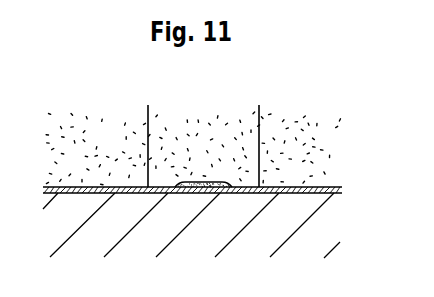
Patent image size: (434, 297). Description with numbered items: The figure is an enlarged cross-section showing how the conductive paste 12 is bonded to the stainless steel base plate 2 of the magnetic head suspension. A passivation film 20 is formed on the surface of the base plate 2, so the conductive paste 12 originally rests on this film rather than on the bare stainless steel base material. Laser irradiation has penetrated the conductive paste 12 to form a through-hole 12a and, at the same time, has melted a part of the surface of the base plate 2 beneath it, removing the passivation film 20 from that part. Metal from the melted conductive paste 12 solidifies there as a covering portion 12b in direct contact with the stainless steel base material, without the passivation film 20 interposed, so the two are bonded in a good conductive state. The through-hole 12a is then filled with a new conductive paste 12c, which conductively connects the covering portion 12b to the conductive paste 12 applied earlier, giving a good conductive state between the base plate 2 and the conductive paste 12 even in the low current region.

The base plate 2 is at (257, 237).
The passivation film 20 is at (321, 183).
The conductive paste 12 is at (301, 122).
The through-hole 12a is at (259, 130).
The covering portion 12b is at (188, 194).
The new conductive paste 12c is at (179, 133).